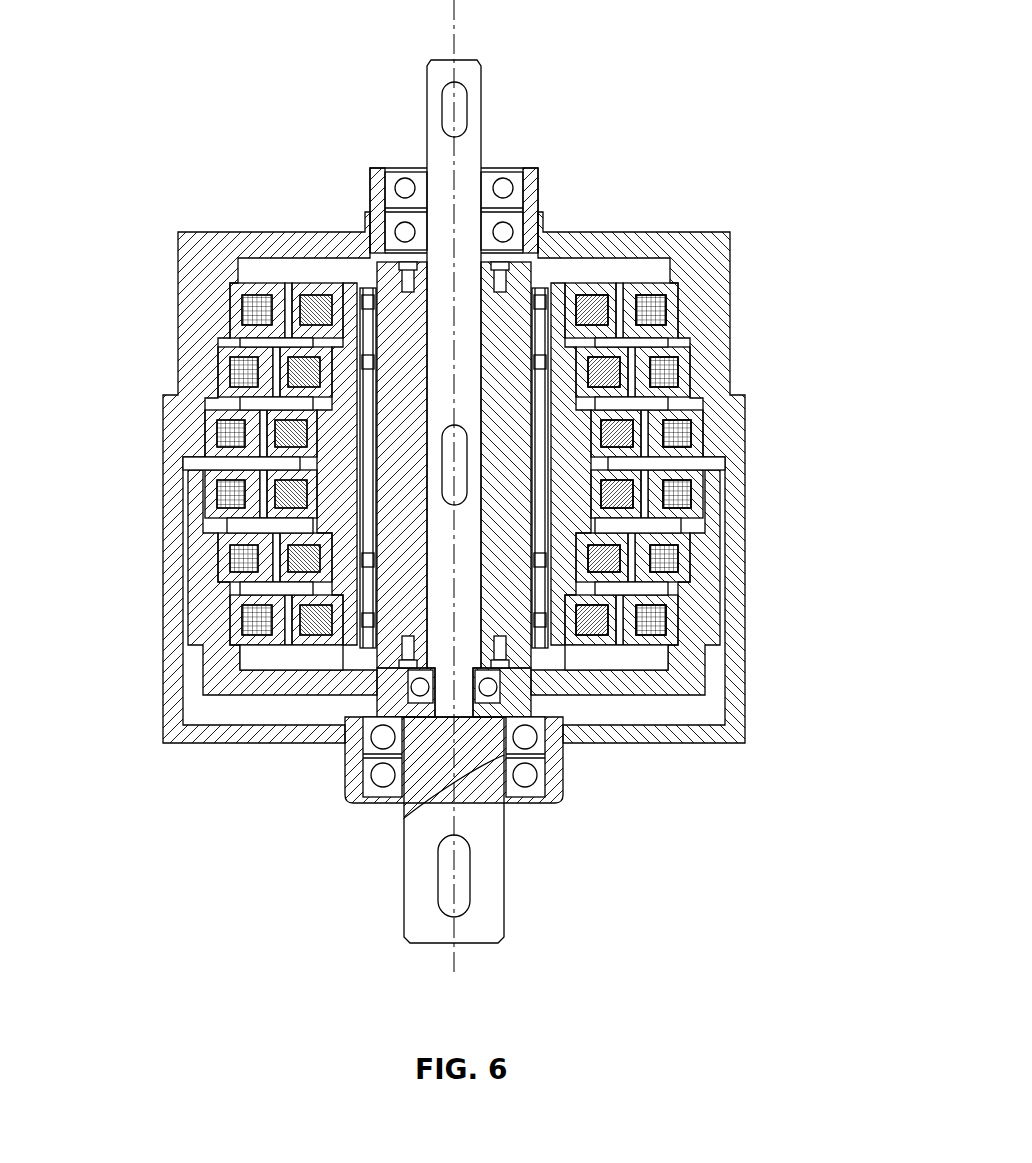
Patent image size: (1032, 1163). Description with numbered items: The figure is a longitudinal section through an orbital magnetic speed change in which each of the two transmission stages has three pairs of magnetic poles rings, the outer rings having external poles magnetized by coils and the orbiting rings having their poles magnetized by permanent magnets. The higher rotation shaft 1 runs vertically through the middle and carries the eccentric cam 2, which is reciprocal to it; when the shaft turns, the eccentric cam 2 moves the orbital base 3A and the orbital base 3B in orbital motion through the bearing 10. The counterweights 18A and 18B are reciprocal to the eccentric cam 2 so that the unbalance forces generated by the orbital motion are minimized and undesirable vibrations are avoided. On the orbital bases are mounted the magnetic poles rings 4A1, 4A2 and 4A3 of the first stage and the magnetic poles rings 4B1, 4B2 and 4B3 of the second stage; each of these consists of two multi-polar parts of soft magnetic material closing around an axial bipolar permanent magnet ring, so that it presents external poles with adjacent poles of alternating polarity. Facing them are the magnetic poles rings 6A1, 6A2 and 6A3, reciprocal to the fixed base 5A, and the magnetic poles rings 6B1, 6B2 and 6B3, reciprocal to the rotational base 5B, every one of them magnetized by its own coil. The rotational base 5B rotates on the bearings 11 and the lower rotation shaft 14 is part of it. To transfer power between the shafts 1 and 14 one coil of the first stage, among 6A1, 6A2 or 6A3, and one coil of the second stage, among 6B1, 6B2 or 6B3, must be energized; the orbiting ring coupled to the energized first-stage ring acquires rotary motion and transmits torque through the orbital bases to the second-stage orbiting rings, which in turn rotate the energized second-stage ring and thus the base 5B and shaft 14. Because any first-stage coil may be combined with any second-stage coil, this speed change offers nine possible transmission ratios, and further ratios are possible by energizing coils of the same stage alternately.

The higher rotation shaft 1 is at (435, 112).
The eccentric cam 2 is at (387, 317).
The orbital base 3A is at (353, 310).
The orbital base 3B is at (372, 602).
The magnetic poles ring 4A1 is at (545, 288).
The magnetic poles ring 4A2 is at (582, 357).
The magnetic poles ring 4A3 is at (590, 425).
The magnetic poles ring 4B1 is at (578, 508).
The magnetic poles ring 4B2 is at (597, 603).
The magnetic poles ring 4B3 is at (635, 630).
The fixed base 5A is at (203, 278).
The rotational base 5B is at (212, 612).
The magnetic poles ring 6A1 is at (668, 320).
The magnetic poles ring 6A2 is at (683, 388).
The magnetic poles ring 6A3 is at (693, 447).
The magnetic poles ring 6B1 is at (697, 520).
The magnetic poles ring 6B2 is at (687, 578).
The magnetic poles ring 6B3 is at (668, 642).
The bearing 10 is at (350, 630).
The bearings 11 is at (385, 780).
The lower rotation shaft 14 is at (500, 865).
The counterweight 18A is at (527, 267).
The counterweight 18B is at (558, 660).